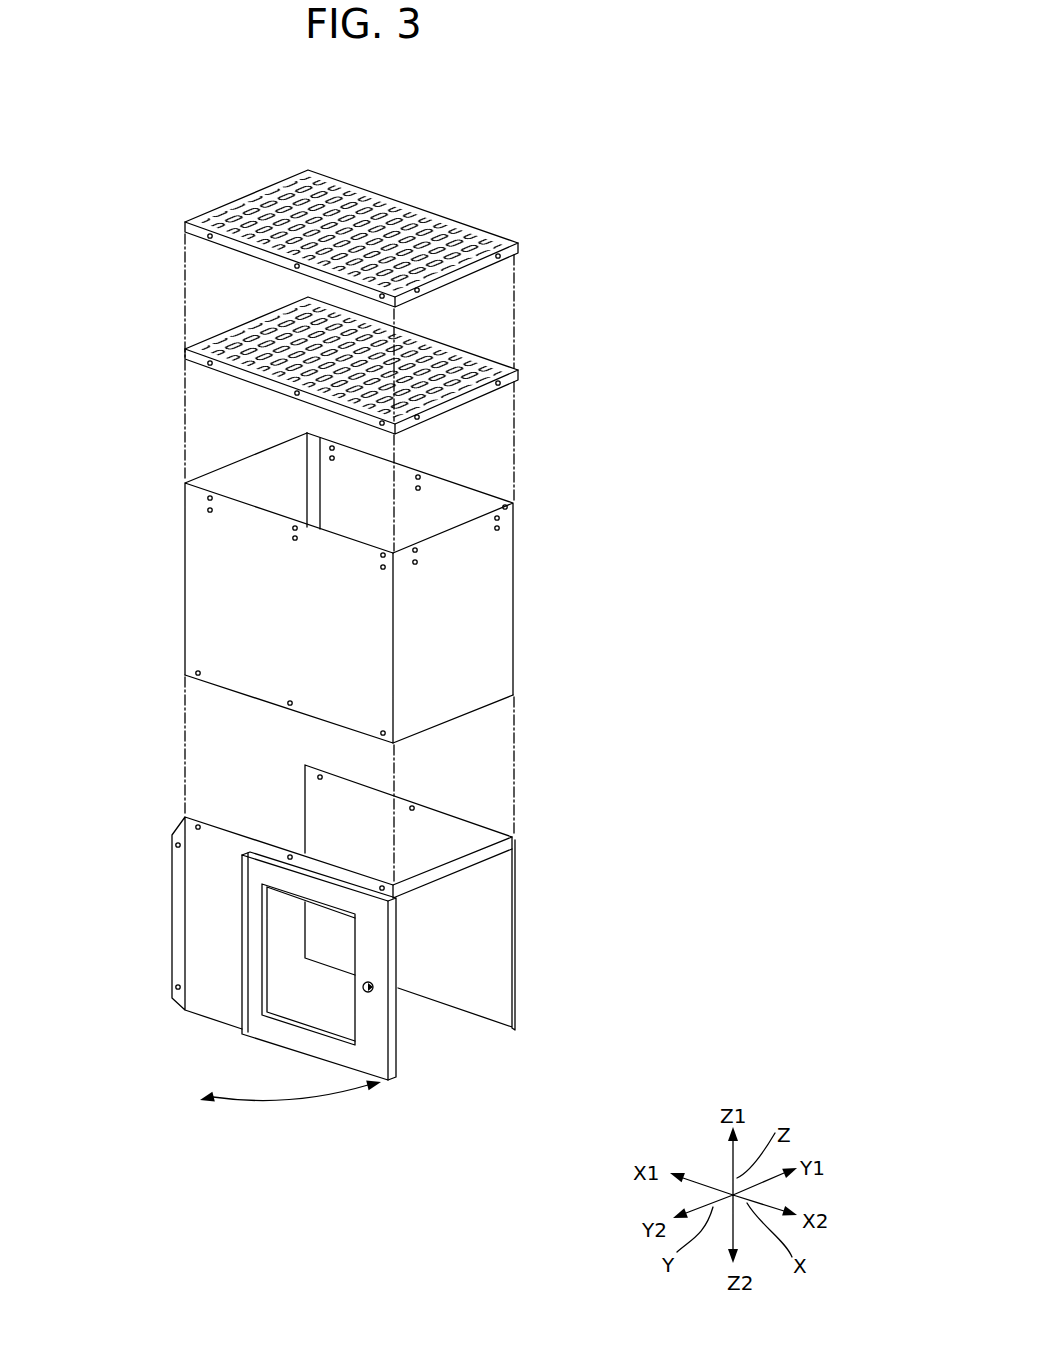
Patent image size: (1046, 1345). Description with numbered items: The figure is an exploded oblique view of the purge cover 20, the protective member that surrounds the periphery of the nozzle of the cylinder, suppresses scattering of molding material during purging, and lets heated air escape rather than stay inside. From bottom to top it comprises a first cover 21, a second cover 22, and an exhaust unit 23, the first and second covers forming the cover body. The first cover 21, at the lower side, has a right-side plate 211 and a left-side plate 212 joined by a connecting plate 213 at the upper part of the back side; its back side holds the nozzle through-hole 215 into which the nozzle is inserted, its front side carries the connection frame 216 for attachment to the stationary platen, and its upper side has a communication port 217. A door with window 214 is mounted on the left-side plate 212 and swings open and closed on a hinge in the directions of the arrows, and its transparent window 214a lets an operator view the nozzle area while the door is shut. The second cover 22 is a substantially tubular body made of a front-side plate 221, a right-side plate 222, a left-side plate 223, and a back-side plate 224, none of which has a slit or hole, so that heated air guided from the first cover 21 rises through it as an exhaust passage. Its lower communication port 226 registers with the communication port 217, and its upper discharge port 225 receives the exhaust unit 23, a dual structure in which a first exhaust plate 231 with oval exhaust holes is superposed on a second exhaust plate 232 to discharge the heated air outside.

The purge cover 20 is at (667, 110).
The first cover 21 is at (655, 767).
The second cover 22 is at (655, 762).
The exhaust unit 23 is at (655, 170).
The right-side plate 211 is at (517, 923).
The left-side plate 212 is at (213, 938).
The connecting plate 213 is at (513, 841).
The door with window 214 is at (262, 1032).
The window 214a is at (345, 1027).
The nozzle through-hole 215 is at (473, 991).
The connection frame 216 is at (217, 817).
The communication port 217 is at (451, 835).
The front-side plate 221 is at (190, 547).
The right-side plate 222 is at (502, 548).
The left-side plate 223 is at (190, 650).
The back-side plate 224 is at (502, 652).
The discharge port 225 is at (455, 512).
The communication port 226 is at (493, 722).
The first exhaust plate 231 is at (522, 243).
The second exhaust plate 232 is at (522, 371).